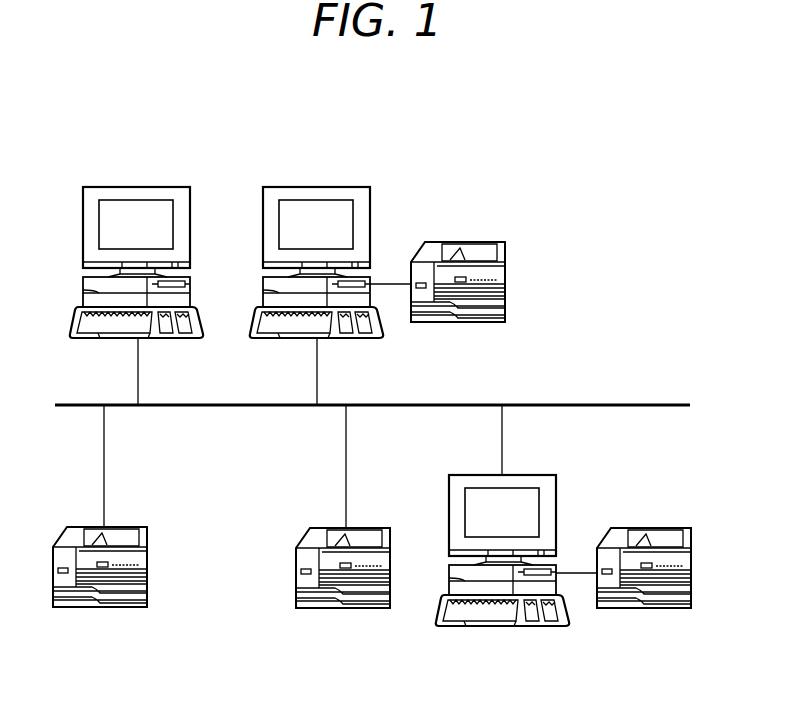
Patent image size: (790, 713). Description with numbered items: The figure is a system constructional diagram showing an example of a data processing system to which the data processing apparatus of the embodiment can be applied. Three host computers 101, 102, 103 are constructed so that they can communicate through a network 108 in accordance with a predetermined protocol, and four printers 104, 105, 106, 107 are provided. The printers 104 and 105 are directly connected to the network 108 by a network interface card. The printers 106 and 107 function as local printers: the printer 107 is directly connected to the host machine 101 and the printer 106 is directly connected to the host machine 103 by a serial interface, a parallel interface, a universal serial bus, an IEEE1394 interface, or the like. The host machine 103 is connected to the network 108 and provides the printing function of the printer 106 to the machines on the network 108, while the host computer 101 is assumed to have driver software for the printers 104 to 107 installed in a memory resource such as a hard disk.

The host computer 101 is at (341, 186).
The host computer 102 is at (164, 186).
The host computer 103 is at (460, 632).
The printer 104 is at (62, 612).
The printer 105 is at (305, 613).
The printer 106 is at (612, 614).
The printer 107 is at (477, 240).
The network 108 is at (597, 403).